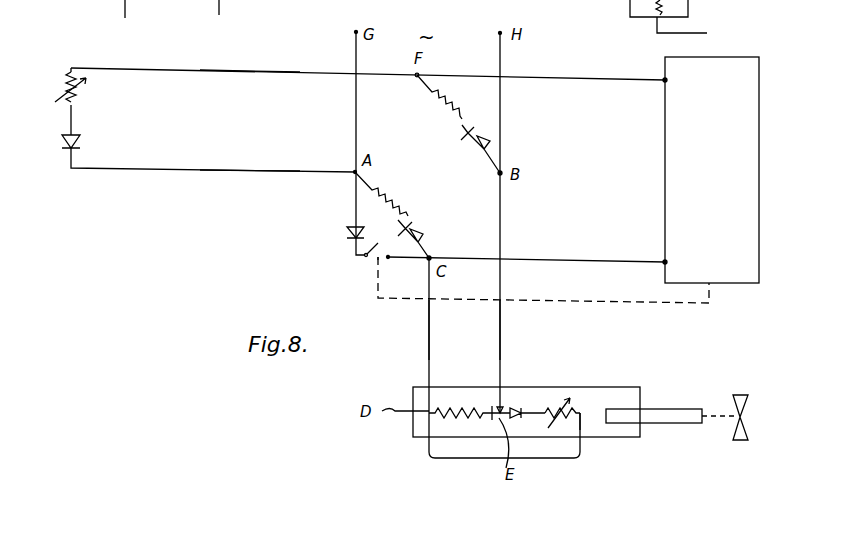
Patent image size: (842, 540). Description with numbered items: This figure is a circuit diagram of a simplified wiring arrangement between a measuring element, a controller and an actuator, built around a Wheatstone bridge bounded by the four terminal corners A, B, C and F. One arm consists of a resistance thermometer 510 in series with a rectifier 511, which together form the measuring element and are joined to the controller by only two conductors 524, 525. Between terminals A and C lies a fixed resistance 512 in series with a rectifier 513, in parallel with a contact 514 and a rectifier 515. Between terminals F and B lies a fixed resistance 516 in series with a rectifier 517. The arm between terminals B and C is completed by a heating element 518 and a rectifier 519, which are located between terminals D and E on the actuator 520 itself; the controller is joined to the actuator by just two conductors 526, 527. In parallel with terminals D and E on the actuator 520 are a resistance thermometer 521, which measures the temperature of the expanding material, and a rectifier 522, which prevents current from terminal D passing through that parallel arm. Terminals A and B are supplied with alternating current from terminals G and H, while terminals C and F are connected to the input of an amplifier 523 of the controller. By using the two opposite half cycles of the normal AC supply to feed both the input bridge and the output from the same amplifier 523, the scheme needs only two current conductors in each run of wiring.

The resistance thermometer 510 is at (88, 87).
The rectifier 511 is at (90, 144).
The fixed resistance 512 is at (389, 194).
The rectifier 513 is at (434, 239).
The contact 514 is at (389, 262).
The rectifier 515 is at (332, 241).
The fixed resistance 516 is at (450, 97).
The rectifier 517 is at (470, 149).
The heating element 518 is at (440, 410).
The rectifier 519 is at (492, 407).
The actuator 520 is at (528, 390).
The resistance thermometer 521 is at (568, 422).
The rectifier 522 is at (516, 406).
The amplifier 523 is at (712, 170).
The conductor 524 is at (230, 71).
The conductor 525 is at (228, 171).
The conductor 526 is at (429, 330).
The conductor 527 is at (500, 330).